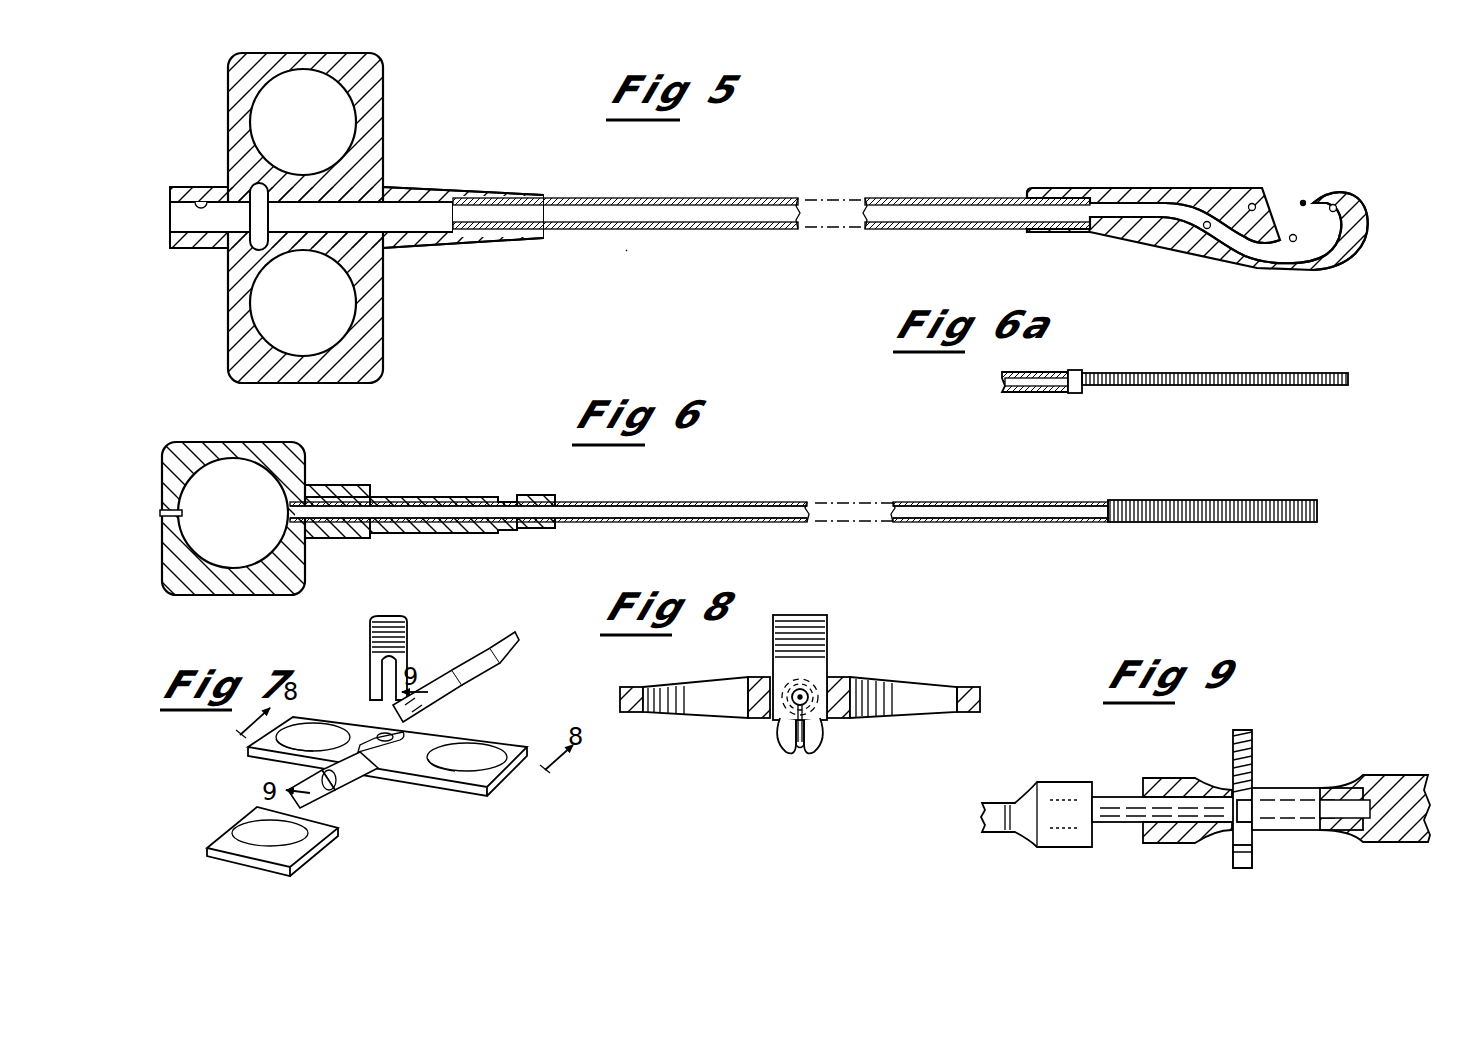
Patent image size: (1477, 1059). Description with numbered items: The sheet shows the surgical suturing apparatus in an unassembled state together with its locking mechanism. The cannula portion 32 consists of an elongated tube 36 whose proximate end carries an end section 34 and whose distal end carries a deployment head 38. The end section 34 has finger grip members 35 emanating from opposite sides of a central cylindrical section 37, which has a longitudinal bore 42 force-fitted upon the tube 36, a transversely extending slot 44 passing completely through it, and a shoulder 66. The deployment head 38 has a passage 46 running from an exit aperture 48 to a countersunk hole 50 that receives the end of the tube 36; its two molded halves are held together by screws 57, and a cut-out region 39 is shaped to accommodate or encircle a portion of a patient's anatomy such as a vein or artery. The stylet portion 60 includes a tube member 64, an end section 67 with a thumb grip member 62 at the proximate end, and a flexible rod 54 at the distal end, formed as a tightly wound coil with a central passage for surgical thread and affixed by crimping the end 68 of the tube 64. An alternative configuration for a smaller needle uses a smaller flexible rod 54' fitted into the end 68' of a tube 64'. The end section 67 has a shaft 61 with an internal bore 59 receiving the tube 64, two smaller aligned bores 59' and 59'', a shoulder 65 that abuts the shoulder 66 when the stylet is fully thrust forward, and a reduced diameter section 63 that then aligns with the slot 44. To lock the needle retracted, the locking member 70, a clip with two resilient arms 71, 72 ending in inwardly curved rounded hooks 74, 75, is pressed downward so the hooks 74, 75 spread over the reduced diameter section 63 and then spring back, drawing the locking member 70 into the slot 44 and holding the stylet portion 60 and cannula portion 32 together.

In FIG. 5, the cannula portion 32 is at (626, 250).
In FIG. 5, the end section 34 is at (410, 120).
In FIG. 5, the finger grip member 35 is at (380, 78).
In FIG. 5, the elongated tube 36 is at (665, 196).
In FIG. 5, the cylindrical section 37 is at (425, 250).
In FIG. 5, the deployment head 38 is at (1118, 190).
In FIG. 5, the cut-out region 39 is at (1303, 200).
In FIG. 5, the bore 42 is at (203, 200).
In FIG. 5, the slot 44 is at (252, 250).
In FIG. 8, the slot 44 is at (828, 722).
In FIG. 5, the passage 46 is at (1175, 205).
In FIG. 5, the exit aperture 48 is at (1358, 190).
In FIG. 5, the countersunk hole 50 is at (1048, 234).
In FIG. 6, the flexible rod 54 is at (1212, 491).
In FIG. 6A, the flexible rod 54' is at (1215, 398).
In FIG. 5, the screws 57 is at (1292, 235).
In FIG. 6, the internal bore 59 is at (384, 472).
In FIG. 6, the smaller bore 59' is at (331, 471).
In FIG. 6, the smaller bore 59'' is at (148, 495).
In FIG. 6, the stylet portion 60 is at (540, 443).
In FIG. 6, the shaft 61 is at (432, 534).
In FIG. 6, the thumb grip member 62 is at (262, 583).
In FIG. 6, the reduced diameter section 63 is at (505, 530).
In FIG. 8, the reduced diameter section 63 is at (800, 748).
In FIG. 9, the reduced diameter section 63 is at (1255, 800).
In FIG. 6, the tube member 64 is at (699, 510).
In FIG. 6A, the tube member 64' is at (1034, 399).
In FIG. 6, the shoulder 65 is at (375, 540).
In FIG. 5, the shoulder 66 is at (170, 250).
In FIG. 6, the end section 67 is at (370, 454).
In FIG. 6, the end of tube 68 is at (1110, 539).
In FIG. 6A, the end of tube 68' is at (1092, 408).
In FIG. 7, the locking member 70 is at (407, 640).
In FIG. 8, the locking member 70 is at (830, 624).
In FIG. 9, the locking member 70 is at (1246, 728).
In FIG. 8, the resilient arm 71 is at (778, 722).
In FIG. 8, the resilient arm 72 is at (820, 680).
In FIG. 9, the resilient arm 72 is at (1237, 832).
In FIG. 8, the hook 74 is at (790, 756).
In FIG. 8, the hook 75 is at (815, 756).
In FIG. 9, the hook 75 is at (1255, 862).